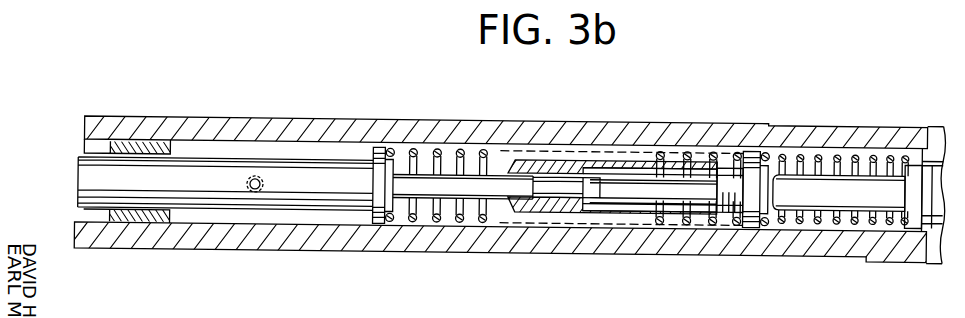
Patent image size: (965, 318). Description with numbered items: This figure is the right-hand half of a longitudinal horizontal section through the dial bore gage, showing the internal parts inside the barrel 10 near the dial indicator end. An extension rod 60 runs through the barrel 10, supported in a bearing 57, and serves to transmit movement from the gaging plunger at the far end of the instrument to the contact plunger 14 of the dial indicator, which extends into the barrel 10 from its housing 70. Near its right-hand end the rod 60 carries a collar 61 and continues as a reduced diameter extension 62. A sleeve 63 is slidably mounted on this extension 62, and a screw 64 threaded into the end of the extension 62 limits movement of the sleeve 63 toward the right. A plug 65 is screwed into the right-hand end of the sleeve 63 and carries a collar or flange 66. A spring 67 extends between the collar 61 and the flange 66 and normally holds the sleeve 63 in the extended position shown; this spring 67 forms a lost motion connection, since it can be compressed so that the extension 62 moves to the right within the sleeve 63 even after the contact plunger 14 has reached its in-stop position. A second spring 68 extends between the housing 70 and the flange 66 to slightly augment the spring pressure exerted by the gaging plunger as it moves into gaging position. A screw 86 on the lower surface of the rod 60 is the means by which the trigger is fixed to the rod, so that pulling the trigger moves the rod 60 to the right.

The barrel 10 is at (390, 240).
The contact plunger 14 is at (862, 180).
The bearing 57 is at (185, 148).
The extension rod 60 is at (228, 195).
The collar 61 is at (380, 146).
The reduced diameter extension 62 is at (475, 180).
The sleeve 63 is at (573, 162).
The screw 64 is at (605, 170).
The plug 65 is at (728, 180).
The collar or flange 66 is at (755, 163).
The spring 67 is at (437, 147).
The spring 68 is at (818, 160).
The housing 70 is at (932, 173).
The screw 86 is at (258, 178).